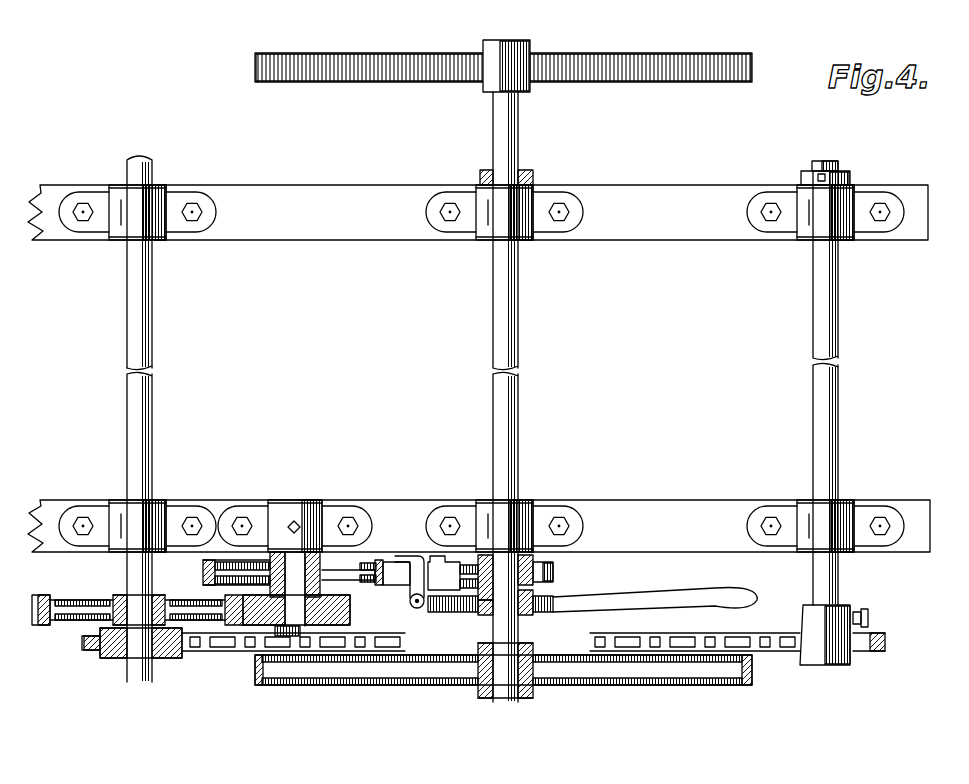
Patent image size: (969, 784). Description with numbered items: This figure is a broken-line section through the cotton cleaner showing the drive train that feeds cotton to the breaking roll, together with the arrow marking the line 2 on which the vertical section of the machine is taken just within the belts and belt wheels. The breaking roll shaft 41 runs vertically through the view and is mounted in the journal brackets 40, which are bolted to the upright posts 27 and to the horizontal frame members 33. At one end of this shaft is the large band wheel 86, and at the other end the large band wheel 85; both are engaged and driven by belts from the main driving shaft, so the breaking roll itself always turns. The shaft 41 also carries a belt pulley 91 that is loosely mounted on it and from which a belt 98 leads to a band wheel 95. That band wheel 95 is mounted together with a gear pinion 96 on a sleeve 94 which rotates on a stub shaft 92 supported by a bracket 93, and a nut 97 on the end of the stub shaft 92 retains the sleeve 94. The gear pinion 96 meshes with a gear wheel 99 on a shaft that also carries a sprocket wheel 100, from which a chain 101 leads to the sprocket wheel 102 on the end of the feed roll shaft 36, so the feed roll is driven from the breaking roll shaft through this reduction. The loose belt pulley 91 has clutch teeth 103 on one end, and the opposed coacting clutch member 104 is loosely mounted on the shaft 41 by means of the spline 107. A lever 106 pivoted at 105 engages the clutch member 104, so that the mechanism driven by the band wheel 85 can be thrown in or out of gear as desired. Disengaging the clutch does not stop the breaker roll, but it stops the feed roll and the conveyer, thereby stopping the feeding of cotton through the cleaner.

The band wheel 86 is at (755, 82).
The horizontal frame member 33 is at (227, 508).
The upright post 27 is at (770, 369).
The journal bracket 40 is at (487, 224).
The breaking roll shaft 41 is at (500, 428).
The feed roll shaft 36 is at (823, 417).
The stub shaft 92 is at (292, 562).
The bracket 93 is at (333, 522).
The sleeve 94 is at (217, 560).
The band wheel 95 is at (380, 565).
The gear pinion 96 is at (352, 608).
The pivot 105 is at (420, 582).
The belt 98 is at (450, 566).
The spline 107 is at (490, 620).
The gear wheel 99 is at (46, 626).
The sprocket wheel 100 is at (117, 652).
The chain 101 is at (228, 655).
The nut 97 is at (322, 630).
The band wheel 85 is at (752, 686).
The clutch member 104 is at (524, 614).
The clutch teeth 103 is at (555, 566).
The belt pulley 91 is at (546, 586).
The lever 106 is at (660, 600).
The sprocket wheel 102 is at (858, 655).
The section line 2 is at (953, 556).